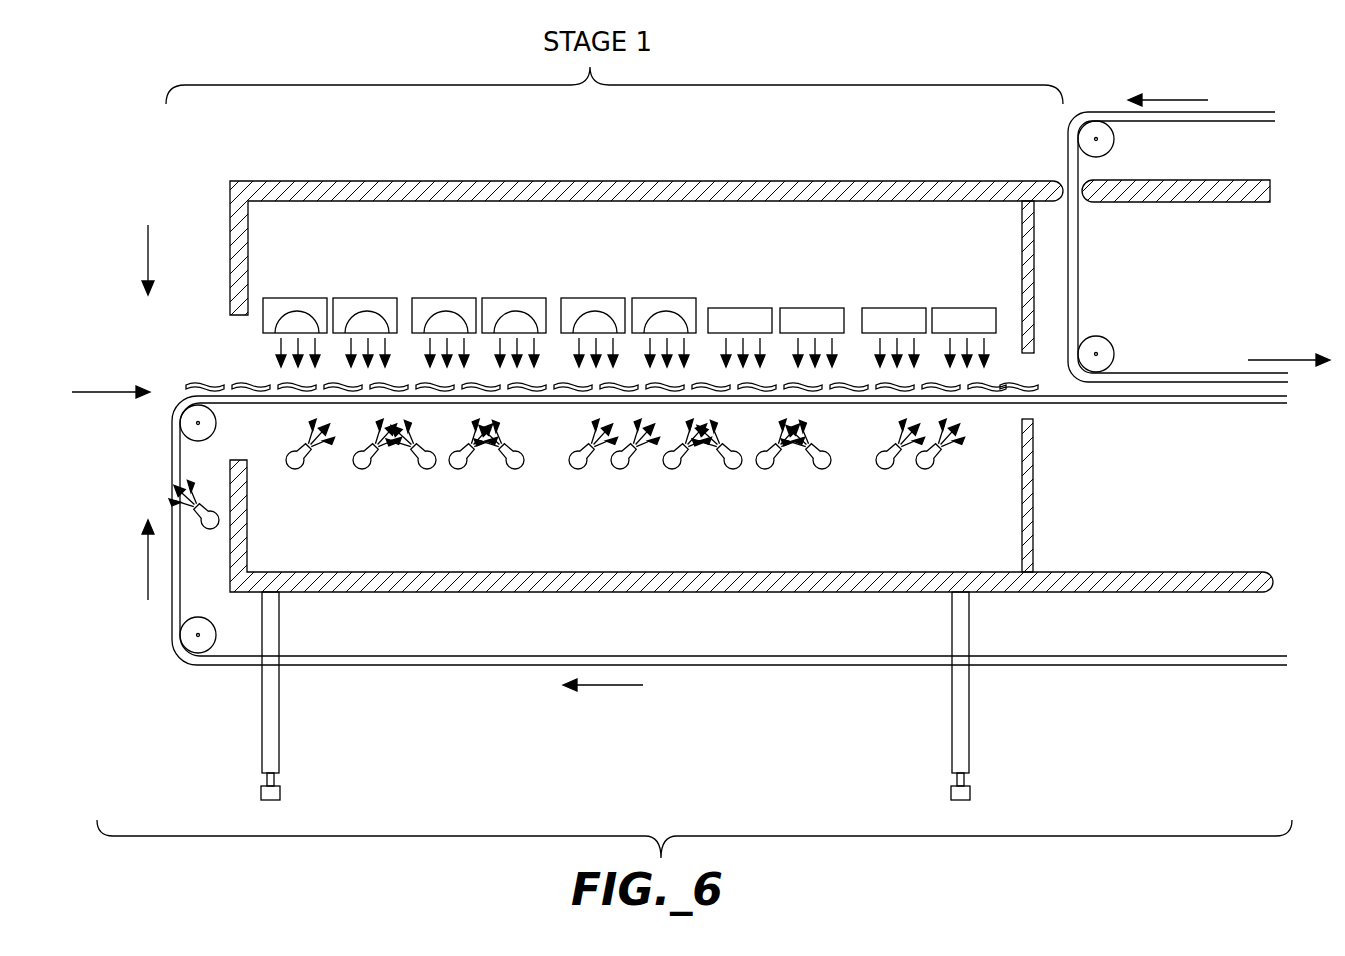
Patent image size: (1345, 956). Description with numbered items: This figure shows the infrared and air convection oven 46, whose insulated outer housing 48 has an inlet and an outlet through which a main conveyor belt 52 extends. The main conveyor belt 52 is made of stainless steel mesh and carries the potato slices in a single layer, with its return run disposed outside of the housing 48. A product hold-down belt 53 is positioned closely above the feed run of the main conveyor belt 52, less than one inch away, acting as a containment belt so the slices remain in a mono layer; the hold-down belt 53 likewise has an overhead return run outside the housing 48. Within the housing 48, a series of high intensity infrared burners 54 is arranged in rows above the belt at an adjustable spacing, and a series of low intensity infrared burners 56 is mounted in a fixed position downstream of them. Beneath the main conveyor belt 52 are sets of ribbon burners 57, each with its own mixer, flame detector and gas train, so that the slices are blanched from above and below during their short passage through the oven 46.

The infrared and air convection oven 46 is at (903, 201).
The insulated outer housing 48 is at (492, 592).
The main conveyor belt 52 is at (1040, 403).
The product hold-down belt 53 is at (1135, 121).
The high intensity infrared burners 54 is at (278, 298).
The low intensity infrared burners 56 is at (732, 308).
The ribbon burners 57 is at (515, 470).